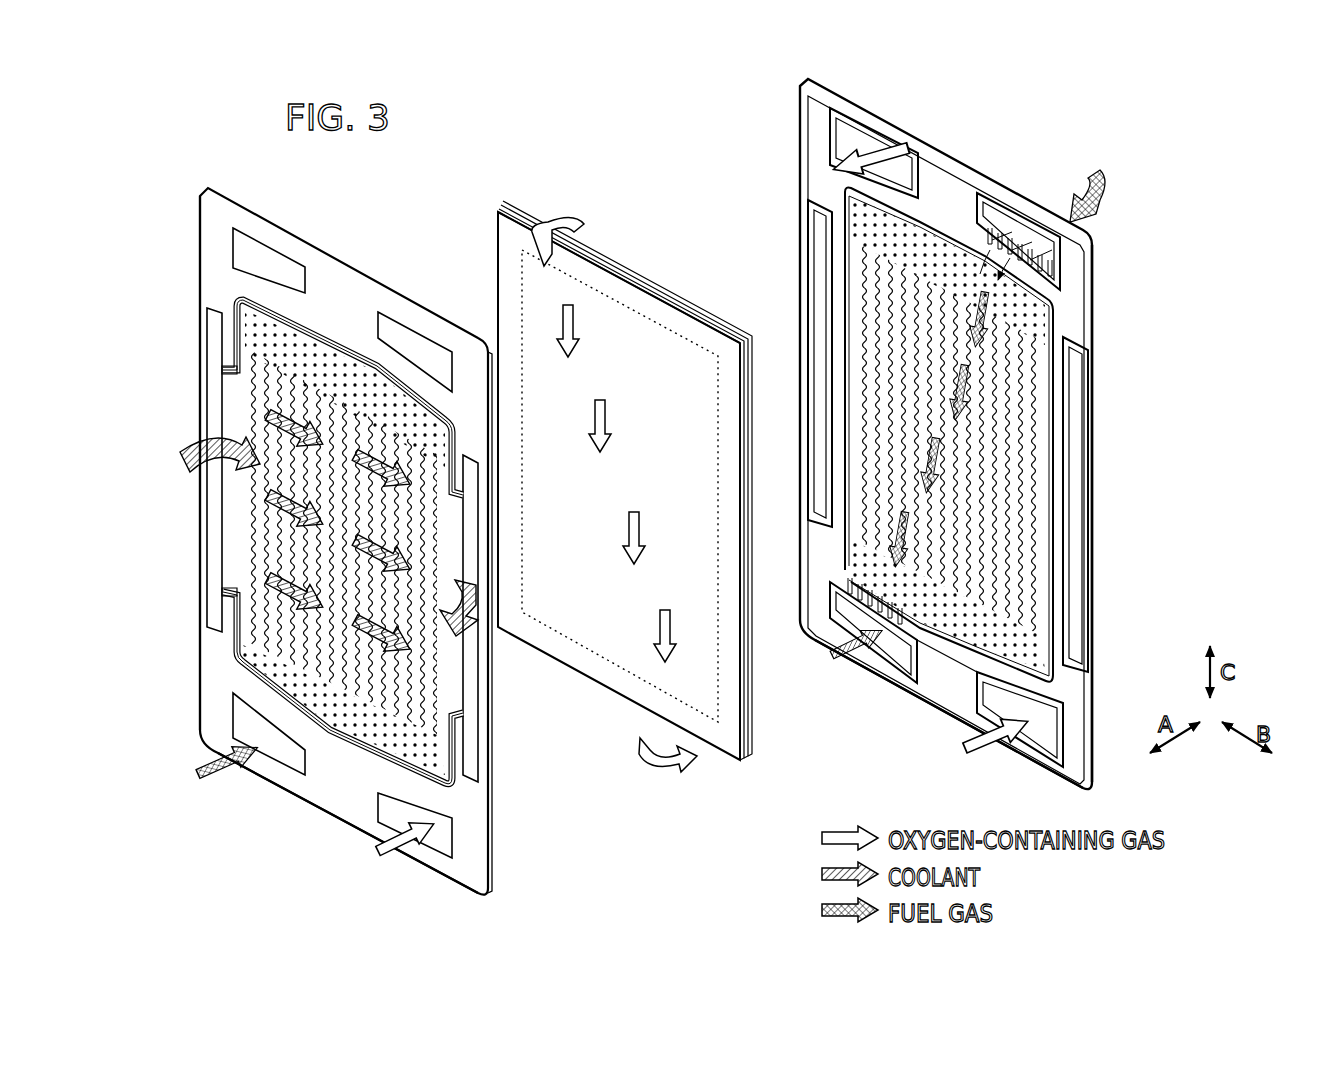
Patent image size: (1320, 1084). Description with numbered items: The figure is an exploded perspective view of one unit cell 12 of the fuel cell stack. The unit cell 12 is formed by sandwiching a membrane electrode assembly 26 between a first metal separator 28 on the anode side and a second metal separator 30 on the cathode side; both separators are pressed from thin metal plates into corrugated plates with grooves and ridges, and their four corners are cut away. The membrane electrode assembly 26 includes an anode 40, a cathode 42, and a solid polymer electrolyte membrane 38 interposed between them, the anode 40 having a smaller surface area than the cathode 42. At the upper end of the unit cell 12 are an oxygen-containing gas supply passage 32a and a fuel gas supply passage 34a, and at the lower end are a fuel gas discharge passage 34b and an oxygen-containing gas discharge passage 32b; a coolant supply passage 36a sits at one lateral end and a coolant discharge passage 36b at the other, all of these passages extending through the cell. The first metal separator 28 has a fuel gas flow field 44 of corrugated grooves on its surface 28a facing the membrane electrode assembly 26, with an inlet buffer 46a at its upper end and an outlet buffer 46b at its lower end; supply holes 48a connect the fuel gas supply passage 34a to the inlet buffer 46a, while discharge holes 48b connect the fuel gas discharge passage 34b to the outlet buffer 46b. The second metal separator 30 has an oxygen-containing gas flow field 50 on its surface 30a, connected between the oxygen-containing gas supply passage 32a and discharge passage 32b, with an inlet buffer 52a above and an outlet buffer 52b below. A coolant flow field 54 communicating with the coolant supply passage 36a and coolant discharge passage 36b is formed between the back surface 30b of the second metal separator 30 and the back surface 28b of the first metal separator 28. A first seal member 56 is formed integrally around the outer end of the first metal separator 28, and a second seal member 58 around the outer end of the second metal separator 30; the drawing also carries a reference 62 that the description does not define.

The unit cell 12 is at (402, 192).
The membrane electrode assembly 26 is at (599, 468).
The first metal separator 28 is at (948, 432).
The surface of the first metal separator 28a is at (926, 702).
The surface of the first metal separator 28b is at (945, 728).
The second metal separator 30 is at (348, 516).
The surface of the second metal separator 30a is at (333, 804).
The surface of the second metal separator 30b is at (306, 787).
The oxygen-containing gas supply passage 32a is at (260, 260).
The oxygen-containing gas discharge passage 32b is at (456, 844).
The fuel gas supply passage 34a is at (406, 349).
The fuel gas discharge passage 34b is at (238, 726).
The coolant supply passage 36a is at (212, 552).
The coolant discharge passage 36b is at (480, 723).
The solid polymer electrolyte membrane 38 is at (682, 302).
The anode 40 is at (702, 328).
The cathode 42 is at (638, 304).
The fuel gas flow field 44 is at (870, 288).
The inlet buffer 46a is at (860, 240).
The outlet buffer 46b is at (1026, 624).
The supply holes 48a is at (1048, 267).
The discharge holes 48b is at (850, 612).
The oxygen-containing gas flow field 50 is at (267, 424).
The inlet buffer 52a is at (230, 332).
The outlet buffer 52b is at (237, 673).
The coolant flow field 54 is at (270, 403).
The first seal member 56 is at (1022, 756).
The second seal member 58 is at (262, 786).
The bead seal 62 is at (938, 632).